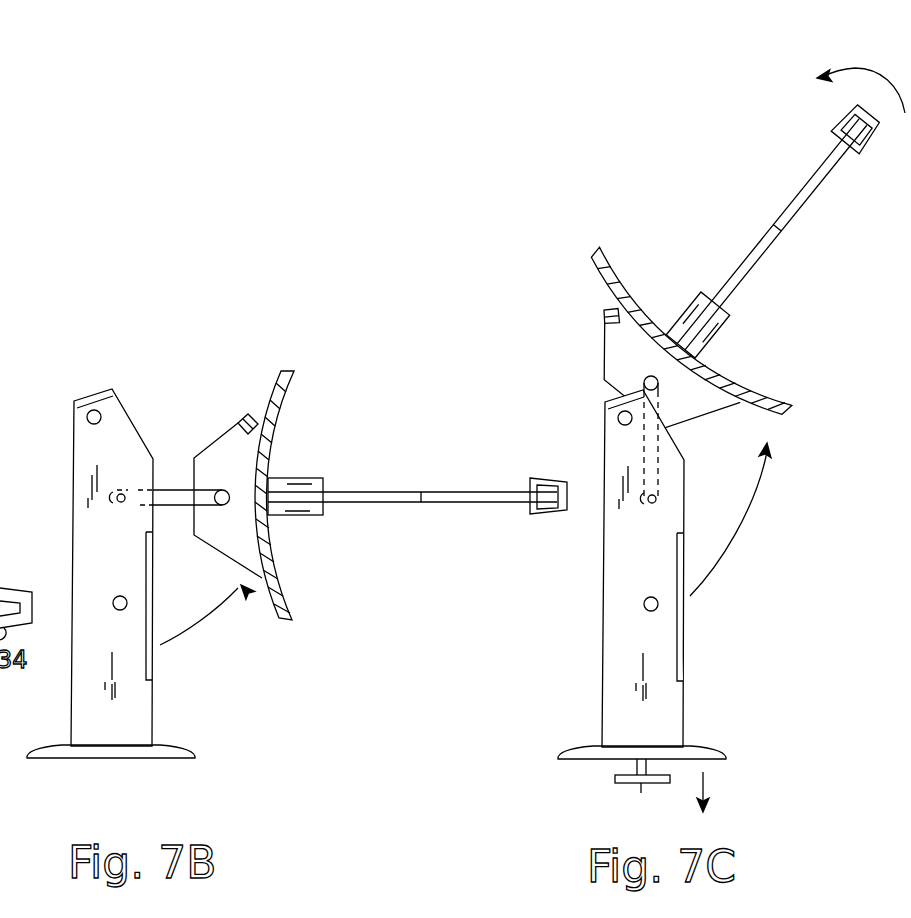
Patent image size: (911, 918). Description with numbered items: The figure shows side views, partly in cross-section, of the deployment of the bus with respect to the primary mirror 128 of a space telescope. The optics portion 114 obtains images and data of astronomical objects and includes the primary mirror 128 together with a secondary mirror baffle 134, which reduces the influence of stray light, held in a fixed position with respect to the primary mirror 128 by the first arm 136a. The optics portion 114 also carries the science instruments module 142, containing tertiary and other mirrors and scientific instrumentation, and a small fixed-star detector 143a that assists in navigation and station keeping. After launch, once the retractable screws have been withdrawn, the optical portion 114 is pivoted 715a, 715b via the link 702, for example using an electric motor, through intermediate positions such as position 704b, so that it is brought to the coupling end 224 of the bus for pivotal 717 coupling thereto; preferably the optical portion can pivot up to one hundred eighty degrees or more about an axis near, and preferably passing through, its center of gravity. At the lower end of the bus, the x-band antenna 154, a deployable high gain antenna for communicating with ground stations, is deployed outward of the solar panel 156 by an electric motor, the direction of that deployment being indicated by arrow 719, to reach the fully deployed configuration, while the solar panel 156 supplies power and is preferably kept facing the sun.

In FIG. 7B, the optics portion 114 is at (203, 357).
In FIG. 7C, the optics portion 114 is at (776, 17).
In FIG. 7B, the primary mirror 128 is at (277, 442).
In FIG. 7C, the primary mirror 128 is at (724, 378).
In FIG. 7B, the secondary mirror baffle 134 is at (555, 516).
In FIG. 7C, the secondary mirror baffle 134 is at (873, 143).
In FIG. 7B, the first arm 136a is at (402, 492).
In FIG. 7C, the first arm 136a is at (754, 258).
In FIG. 7B, the science instruments module 142 is at (248, 478).
In FIG. 7C, the science instruments module 142 is at (709, 411).
In FIG. 7B, the fixed-star detector 143a is at (246, 414).
In FIG. 7C, the fixed-star detector 143a is at (602, 317).
In FIG. 7C, the x-band antenna 154 is at (613, 782).
In FIG. 7C, the solar panel 156 is at (708, 747).
In FIG. 7B, the coupling end 224 is at (118, 432).
In FIG. 7C, the coupling end 224 is at (614, 432).
In FIG. 7B, the link 702 is at (171, 489).
In FIG. 7C, the link 702 is at (667, 467).
In FIG. 7B, the position 704b is at (303, 517).
In FIG. 7C, the position 704b is at (697, 325).
In FIG. 7B, the pivoting 715a is at (193, 620).
In FIG. 7C, the pivoting 715b is at (727, 562).
In FIG. 7C, the pivotal coupling 717 is at (886, 72).
In FIG. 7C, the downward direction 719 is at (707, 783).